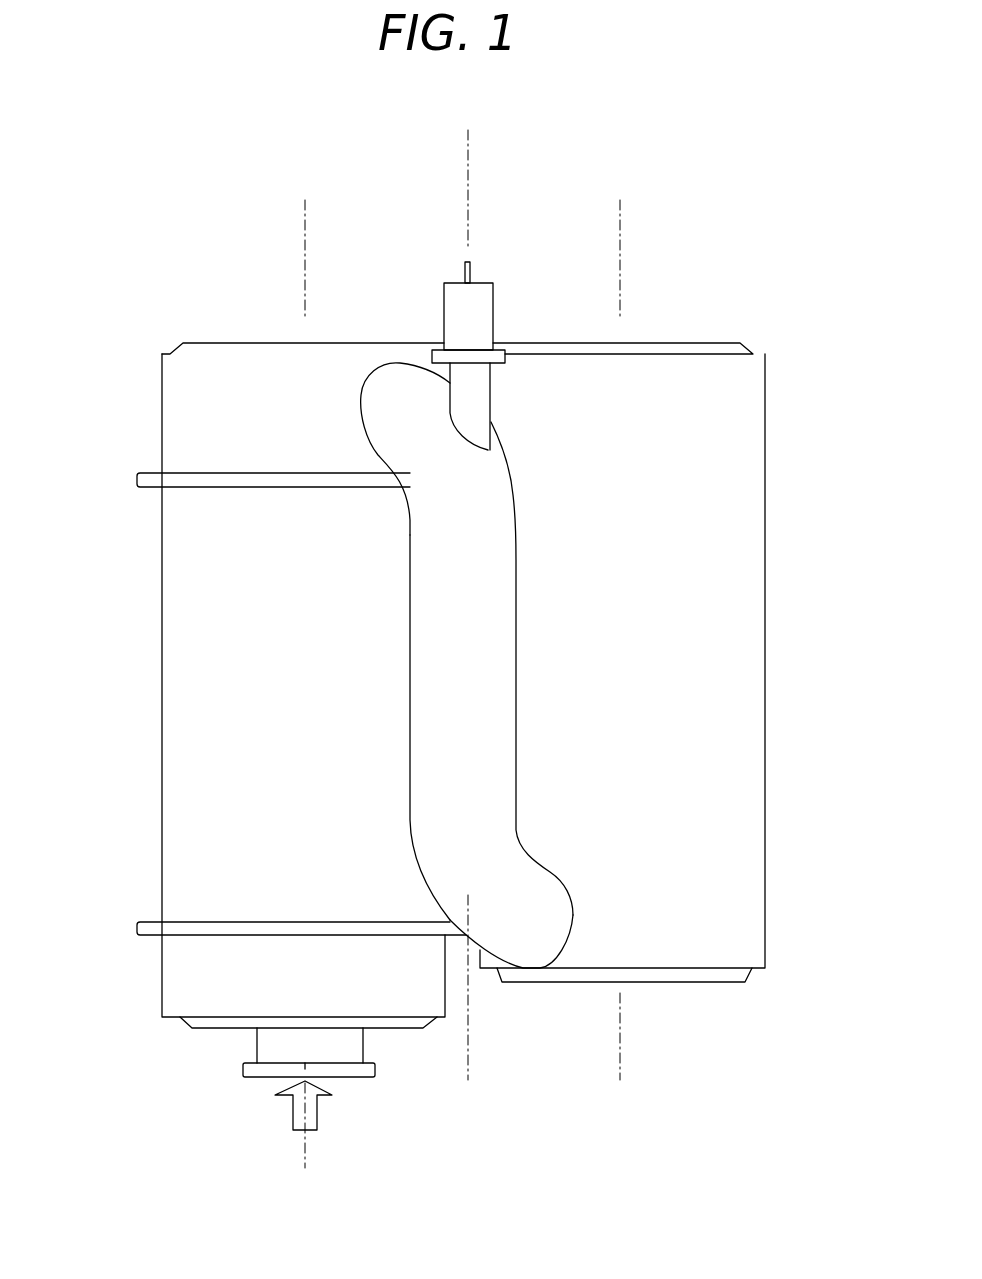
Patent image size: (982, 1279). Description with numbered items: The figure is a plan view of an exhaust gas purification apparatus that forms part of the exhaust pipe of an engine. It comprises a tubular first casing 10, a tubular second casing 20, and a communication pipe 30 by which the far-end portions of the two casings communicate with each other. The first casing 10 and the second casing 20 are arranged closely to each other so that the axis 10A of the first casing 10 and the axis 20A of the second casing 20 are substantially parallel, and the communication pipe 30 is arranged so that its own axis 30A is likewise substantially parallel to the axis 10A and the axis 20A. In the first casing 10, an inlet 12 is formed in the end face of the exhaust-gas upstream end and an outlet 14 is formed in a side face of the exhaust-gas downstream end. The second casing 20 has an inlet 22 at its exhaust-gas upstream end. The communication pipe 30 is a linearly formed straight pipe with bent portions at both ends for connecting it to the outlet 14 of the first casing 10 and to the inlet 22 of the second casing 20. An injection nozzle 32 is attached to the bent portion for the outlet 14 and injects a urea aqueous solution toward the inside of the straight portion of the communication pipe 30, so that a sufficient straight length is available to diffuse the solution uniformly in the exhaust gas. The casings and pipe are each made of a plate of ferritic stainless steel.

The first casing 10 is at (161, 652).
The axis of the first casing 10A is at (303, 245).
The inlet 12 is at (270, 1078).
The outlet 14 is at (390, 380).
The second casing 20 is at (765, 635).
The axis of the second casing 20A is at (622, 223).
The inlet 22 is at (540, 945).
The communication pipe 30 is at (490, 580).
The axis of the communication pipe 30A is at (467, 1057).
The injection nozzle 32 is at (495, 293).